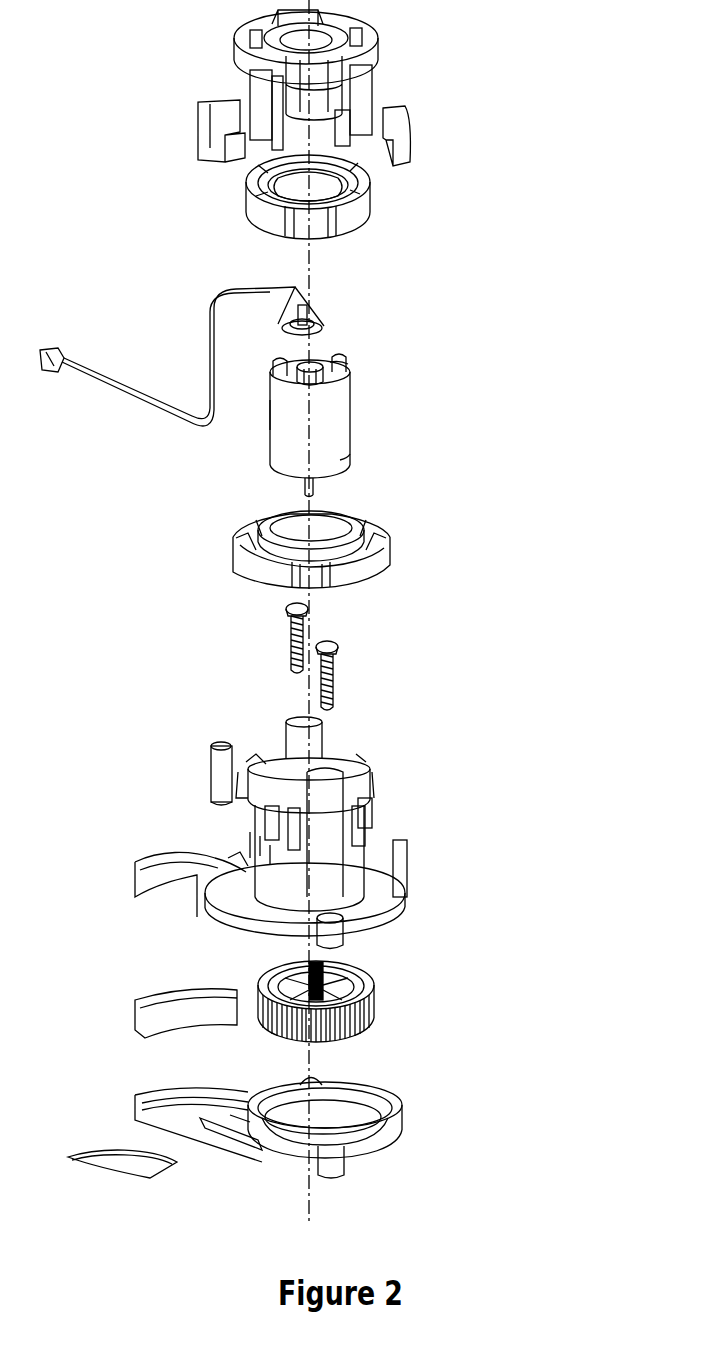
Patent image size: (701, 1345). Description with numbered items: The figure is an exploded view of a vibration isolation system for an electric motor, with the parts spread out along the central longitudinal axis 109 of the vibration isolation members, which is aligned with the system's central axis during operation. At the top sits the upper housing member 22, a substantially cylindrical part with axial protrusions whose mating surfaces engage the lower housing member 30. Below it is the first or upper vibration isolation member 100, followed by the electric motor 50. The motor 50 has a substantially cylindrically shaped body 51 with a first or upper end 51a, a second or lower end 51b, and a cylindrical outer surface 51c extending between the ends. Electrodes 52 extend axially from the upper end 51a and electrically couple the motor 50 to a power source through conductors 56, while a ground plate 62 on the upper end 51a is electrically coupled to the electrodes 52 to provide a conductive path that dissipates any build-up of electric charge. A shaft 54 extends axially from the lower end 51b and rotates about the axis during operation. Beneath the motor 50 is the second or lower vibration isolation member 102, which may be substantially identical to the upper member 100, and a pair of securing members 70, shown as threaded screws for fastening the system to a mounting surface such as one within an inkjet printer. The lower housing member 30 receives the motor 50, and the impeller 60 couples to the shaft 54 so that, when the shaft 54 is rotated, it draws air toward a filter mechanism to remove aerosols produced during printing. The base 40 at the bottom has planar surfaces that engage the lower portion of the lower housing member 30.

The upper housing member 22 is at (418, 105).
The first or upper vibration isolation member 100 is at (383, 205).
The ground plate 62 is at (338, 328).
The electrodes 52 is at (288, 360).
The first or upper end 51a is at (351, 368).
The body 51 is at (364, 400).
The electric motor 50 is at (367, 398).
The second or lower end 51b is at (356, 460).
The cylindrical outer surface 51c is at (275, 413).
The shaft 54 is at (319, 487).
The conductors 56 is at (212, 358).
The second or lower vibration isolation member 102 is at (399, 547).
The securing members 70 is at (310, 628).
The lower housing member 30 is at (422, 855).
The impeller 60 is at (386, 1000).
The base 40 is at (415, 1122).
The central longitudinal axis 109 is at (310, 1212).